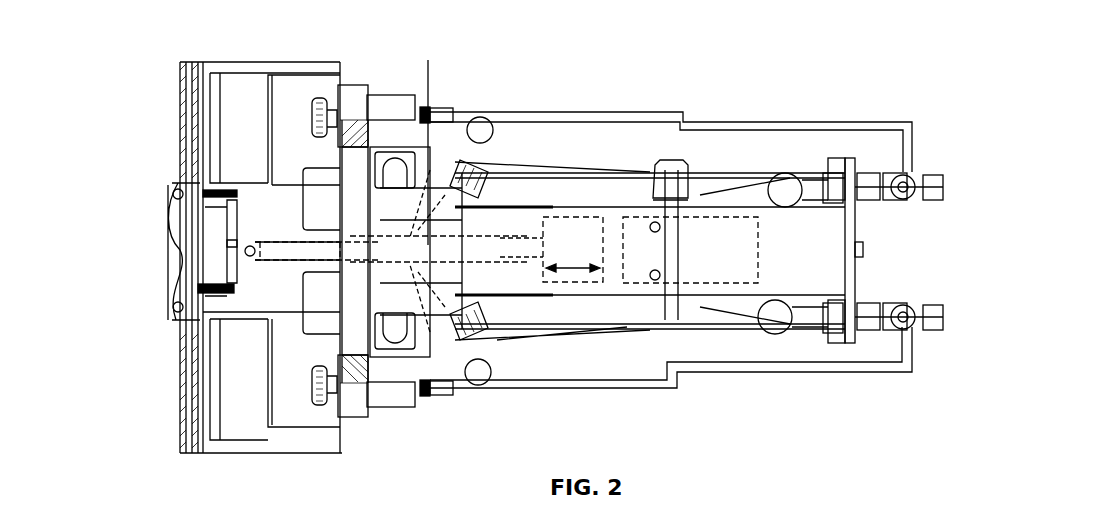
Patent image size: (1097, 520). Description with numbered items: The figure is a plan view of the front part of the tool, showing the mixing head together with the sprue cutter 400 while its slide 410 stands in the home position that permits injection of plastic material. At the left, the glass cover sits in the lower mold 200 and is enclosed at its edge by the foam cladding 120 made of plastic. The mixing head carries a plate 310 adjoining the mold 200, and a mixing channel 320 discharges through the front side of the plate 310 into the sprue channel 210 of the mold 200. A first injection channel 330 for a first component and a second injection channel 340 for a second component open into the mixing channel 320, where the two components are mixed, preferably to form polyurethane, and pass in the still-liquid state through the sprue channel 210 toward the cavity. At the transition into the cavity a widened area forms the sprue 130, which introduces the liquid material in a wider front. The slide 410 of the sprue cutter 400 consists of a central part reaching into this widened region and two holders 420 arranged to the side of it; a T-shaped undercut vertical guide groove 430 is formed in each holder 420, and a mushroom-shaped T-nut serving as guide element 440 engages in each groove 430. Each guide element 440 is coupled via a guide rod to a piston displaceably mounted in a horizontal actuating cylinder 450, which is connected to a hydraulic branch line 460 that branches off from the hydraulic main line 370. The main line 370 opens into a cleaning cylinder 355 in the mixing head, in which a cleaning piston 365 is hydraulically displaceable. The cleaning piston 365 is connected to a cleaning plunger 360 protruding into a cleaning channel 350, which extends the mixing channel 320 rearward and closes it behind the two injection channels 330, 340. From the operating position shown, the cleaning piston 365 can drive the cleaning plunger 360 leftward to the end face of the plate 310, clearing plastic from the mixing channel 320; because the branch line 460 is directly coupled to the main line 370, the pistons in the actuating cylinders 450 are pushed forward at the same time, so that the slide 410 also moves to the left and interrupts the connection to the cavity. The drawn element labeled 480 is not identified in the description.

The foam cladding 120 is at (186, 108).
The mold 200 is at (232, 442).
The holders 420 is at (277, 93).
The guide groove 430 is at (312, 100).
The guide element 440 is at (318, 100).
The actuating cylinder 450 is at (387, 107).
The mixing channel 320 is at (362, 253).
The plate 310 is at (358, 342).
The first injection channel 330 is at (428, 60).
The sprue channel 210 is at (244, 252).
The sprue 130 is at (210, 262).
The sprue cutter 400 is at (210, 205).
The slide 410 is at (220, 303).
The second injection channel 340 is at (430, 247).
The cleaning channel 350 is at (510, 258).
The cleaning plunger 360 is at (560, 243).
The cleaning cylinder 355 is at (585, 228).
The cleaning piston 365 is at (615, 233).
The hydraulic branch line 460 is at (633, 117).
The roller 480 is at (782, 188).
The hydraulic main line 370 is at (917, 172).